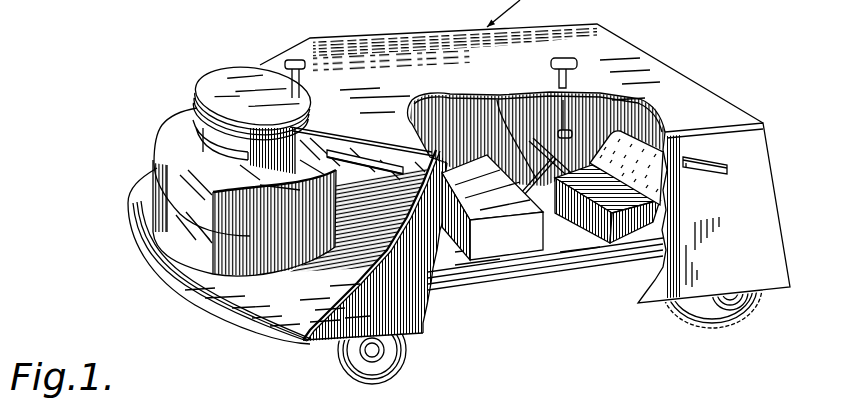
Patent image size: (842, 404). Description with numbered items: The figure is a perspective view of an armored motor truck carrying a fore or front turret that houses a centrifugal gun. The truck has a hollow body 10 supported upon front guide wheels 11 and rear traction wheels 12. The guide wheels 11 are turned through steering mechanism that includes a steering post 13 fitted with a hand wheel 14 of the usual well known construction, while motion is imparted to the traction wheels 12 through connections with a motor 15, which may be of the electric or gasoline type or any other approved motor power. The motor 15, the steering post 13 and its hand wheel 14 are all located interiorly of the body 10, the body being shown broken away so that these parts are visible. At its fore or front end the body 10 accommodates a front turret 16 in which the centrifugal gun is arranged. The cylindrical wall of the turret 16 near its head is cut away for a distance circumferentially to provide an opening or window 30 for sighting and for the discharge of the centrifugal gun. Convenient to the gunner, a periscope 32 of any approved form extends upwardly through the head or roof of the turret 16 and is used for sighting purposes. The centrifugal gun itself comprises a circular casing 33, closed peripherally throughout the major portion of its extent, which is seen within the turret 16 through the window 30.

The hollow body 10 is at (745, 108).
The front guide wheels 11 is at (340, 353).
The rear traction wheels 12 is at (722, 318).
The steering post 13 is at (498, 95).
The hand wheel 14 is at (575, 180).
The motor 15 is at (525, 243).
The front turret 16 is at (227, 80).
The opening or window 30 is at (195, 122).
The periscope 32 is at (288, 62).
The circular casing 33 is at (213, 138).